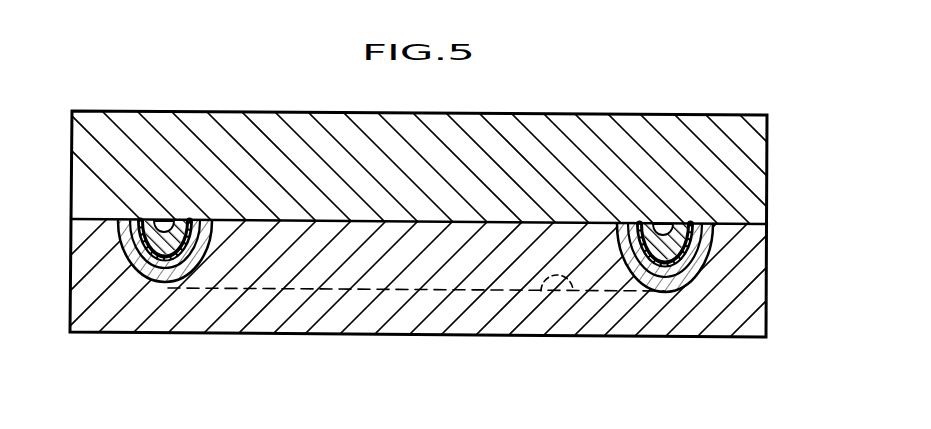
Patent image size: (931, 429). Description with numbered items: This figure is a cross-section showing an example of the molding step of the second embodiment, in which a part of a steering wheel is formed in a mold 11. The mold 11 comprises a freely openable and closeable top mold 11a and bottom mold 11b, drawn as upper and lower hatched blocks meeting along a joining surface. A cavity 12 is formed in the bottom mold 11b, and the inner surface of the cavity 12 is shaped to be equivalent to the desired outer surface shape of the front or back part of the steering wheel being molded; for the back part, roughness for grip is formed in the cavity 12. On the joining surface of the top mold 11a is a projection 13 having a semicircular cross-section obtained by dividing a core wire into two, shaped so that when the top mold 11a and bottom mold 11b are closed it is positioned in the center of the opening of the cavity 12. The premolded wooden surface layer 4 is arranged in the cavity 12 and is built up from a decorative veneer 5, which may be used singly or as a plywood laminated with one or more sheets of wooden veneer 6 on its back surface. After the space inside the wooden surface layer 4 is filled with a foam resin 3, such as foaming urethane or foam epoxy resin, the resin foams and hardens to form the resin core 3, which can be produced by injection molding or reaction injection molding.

The mold 11 is at (693, 114).
The top mold 11a is at (744, 168).
The bottom mold 11b is at (740, 281).
The cavity 12 is at (571, 291).
The projection 13 is at (167, 221).
The foam resin 3 is at (122, 234).
The wooden surface layer 4 is at (34, 258).
The decorative veneer 5 is at (158, 284).
The wooden veneer 6 is at (140, 262).